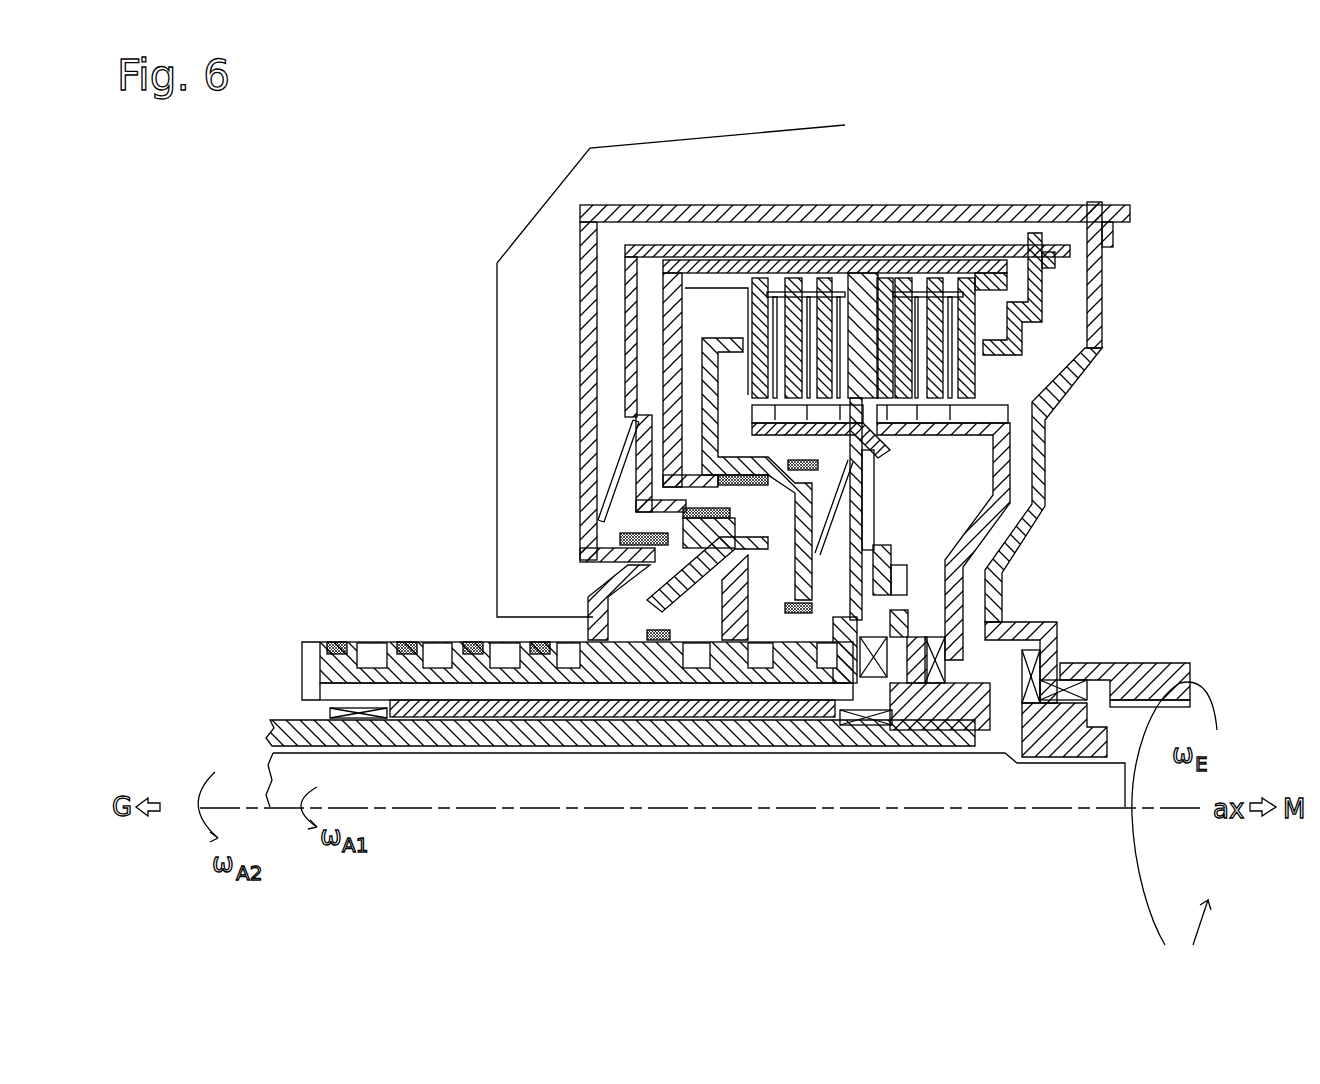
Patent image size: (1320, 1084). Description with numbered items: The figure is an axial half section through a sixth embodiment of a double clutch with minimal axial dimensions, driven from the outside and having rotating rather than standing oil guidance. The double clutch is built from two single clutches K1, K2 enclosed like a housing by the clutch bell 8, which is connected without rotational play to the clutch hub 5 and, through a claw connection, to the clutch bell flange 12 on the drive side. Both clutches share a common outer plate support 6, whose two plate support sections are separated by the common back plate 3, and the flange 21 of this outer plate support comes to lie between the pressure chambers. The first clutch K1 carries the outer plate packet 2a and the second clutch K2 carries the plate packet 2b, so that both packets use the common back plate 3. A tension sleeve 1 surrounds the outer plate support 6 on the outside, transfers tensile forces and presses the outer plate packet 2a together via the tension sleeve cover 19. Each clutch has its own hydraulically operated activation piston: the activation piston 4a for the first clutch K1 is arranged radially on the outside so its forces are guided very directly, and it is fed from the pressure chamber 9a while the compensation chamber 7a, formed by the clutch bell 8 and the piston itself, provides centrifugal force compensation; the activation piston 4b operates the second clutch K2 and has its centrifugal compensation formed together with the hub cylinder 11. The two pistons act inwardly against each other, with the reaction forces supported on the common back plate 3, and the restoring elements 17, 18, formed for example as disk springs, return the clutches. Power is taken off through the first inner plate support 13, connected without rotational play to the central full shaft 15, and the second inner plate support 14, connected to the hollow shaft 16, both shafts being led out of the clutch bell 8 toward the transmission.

The tension sleeve 1 is at (897, 298).
The outer plate packet 2a is at (973, 389).
The plate packet 2b is at (842, 278).
The common back plate 3 is at (865, 268).
The activation piston 4a is at (645, 580).
The activation piston 4b is at (705, 430).
The clutch hub 5 is at (320, 677).
The common outer plate support 6 is at (717, 282).
The compensation chamber 7a is at (693, 545).
The clutch bell 8 is at (828, 207).
The pressure chamber 9a is at (640, 615).
The hub cylinder 11 is at (860, 540).
The clutch bell flange 12 is at (1078, 625).
The first inner plate support 13 is at (1003, 478).
The second inner plate support 14 is at (855, 540).
The full shaft 15 is at (957, 797).
The hollow shaft 16 is at (708, 733).
The restoring element 17 is at (625, 488).
The restoring element 18 is at (845, 500).
The tension sleeve cover 19 is at (1033, 312).
The flange of the outer plate support 21 is at (660, 360).
The first clutch K1 is at (945, 330).
The second clutch K2 is at (792, 330).